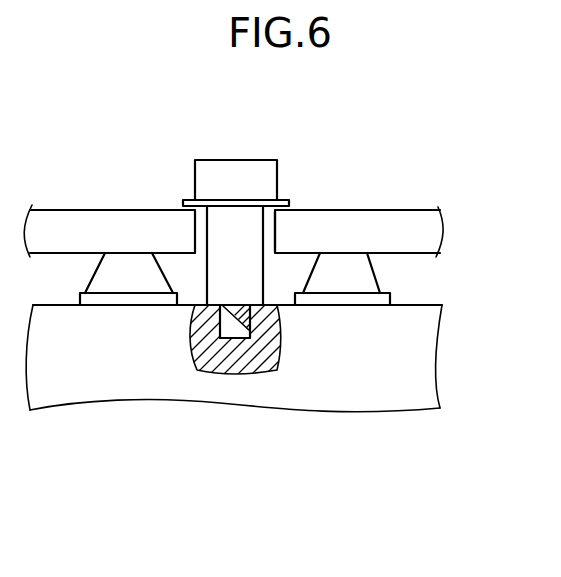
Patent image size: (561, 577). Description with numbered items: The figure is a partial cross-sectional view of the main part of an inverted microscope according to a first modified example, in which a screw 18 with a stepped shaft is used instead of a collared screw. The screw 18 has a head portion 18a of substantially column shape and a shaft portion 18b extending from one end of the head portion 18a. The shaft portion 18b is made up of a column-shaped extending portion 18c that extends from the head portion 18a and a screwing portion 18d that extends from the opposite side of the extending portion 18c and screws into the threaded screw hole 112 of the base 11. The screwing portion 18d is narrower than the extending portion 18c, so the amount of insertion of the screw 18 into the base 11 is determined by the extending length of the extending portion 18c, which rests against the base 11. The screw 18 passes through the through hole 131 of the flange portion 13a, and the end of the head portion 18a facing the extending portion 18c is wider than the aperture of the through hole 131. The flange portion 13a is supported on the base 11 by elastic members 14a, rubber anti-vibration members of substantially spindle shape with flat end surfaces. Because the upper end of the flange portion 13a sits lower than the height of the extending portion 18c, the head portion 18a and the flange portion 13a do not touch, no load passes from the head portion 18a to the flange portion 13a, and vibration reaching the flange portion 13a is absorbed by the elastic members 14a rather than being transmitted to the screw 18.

The base 11 is at (410, 370).
The threaded screw hole 112 is at (240, 332).
The flange portion 13a is at (427, 233).
The through hole 131 is at (275, 235).
The elastic member 14a is at (127, 280).
The screw 18 is at (272, 146).
The head portion 18a is at (238, 172).
The shaft portion 18b is at (240, 496).
The extending portion 18c is at (185, 302).
The screwing portion 18d is at (232, 334).